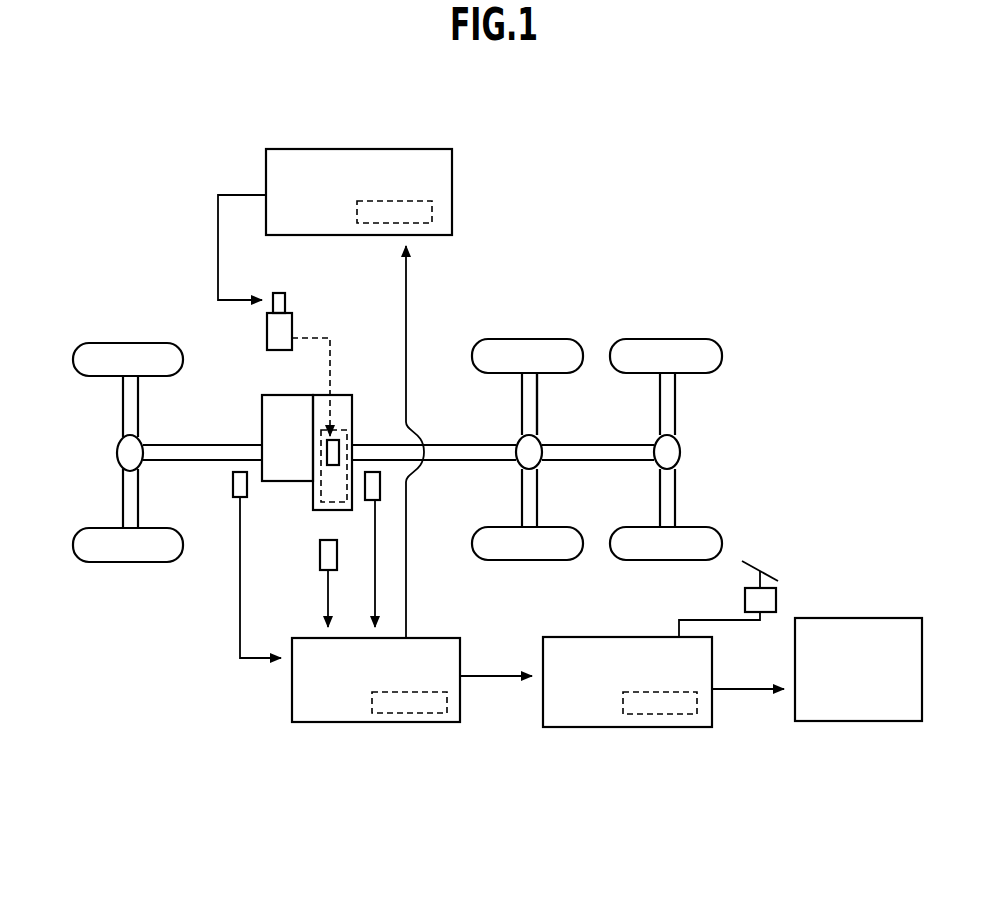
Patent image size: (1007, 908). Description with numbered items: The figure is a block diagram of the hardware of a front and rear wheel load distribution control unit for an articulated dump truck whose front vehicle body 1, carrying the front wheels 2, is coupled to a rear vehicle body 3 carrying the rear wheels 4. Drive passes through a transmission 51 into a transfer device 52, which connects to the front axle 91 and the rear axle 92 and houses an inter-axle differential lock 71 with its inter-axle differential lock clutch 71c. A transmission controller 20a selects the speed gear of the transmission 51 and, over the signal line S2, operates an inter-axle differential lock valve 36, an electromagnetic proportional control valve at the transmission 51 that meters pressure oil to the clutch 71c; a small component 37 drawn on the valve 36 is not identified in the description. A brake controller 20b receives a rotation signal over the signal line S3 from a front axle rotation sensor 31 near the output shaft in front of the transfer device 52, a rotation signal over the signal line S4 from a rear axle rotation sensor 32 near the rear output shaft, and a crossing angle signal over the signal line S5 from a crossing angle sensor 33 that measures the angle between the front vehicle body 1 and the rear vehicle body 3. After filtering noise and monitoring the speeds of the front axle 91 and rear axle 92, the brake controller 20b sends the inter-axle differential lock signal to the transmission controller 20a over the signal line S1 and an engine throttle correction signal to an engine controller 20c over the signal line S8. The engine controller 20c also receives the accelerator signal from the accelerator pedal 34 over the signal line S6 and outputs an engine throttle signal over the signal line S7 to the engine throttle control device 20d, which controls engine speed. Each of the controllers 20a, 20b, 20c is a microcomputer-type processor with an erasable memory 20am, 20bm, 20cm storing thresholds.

The front vehicle body 1 is at (100, 485).
The front wheels 2 is at (80, 564).
The rear vehicle body 3 is at (510, 323).
The rear wheels 4 is at (516, 561).
The front axle 91 is at (100, 432).
The rear axle 92 is at (588, 340).
The transmission 51 is at (262, 415).
The transfer device 52 is at (343, 395).
The inter-axle differential lock 71 is at (318, 483).
The inter-axle differential lock clutch 71c is at (327, 504).
The inter-axle differential lock valve 36 is at (266, 325).
The shift valve 37 is at (307, 337).
The front axle rotation sensor 31 is at (233, 490).
The rear axle rotation sensor 32 is at (381, 487).
The crossing angle sensor 33 is at (319, 553).
The accelerator pedal 34 is at (777, 596).
The transmission controller 20a is at (430, 149).
The erasable memory 20am is at (432, 205).
The brake controller 20b is at (313, 723).
The erasable memory 20bm is at (380, 714).
The engine controller 20c is at (565, 728).
The erasable memory 20cm is at (640, 715).
The engine throttle control device 20d is at (825, 722).
The signal line S1 is at (407, 312).
The signal line S2 is at (218, 243).
The signal line S3 is at (240, 617).
The signal line S4 is at (376, 580).
The signal line S5 is at (328, 598).
The signal line S6 is at (720, 613).
The signal line S7 is at (737, 690).
The signal line S8 is at (482, 678).